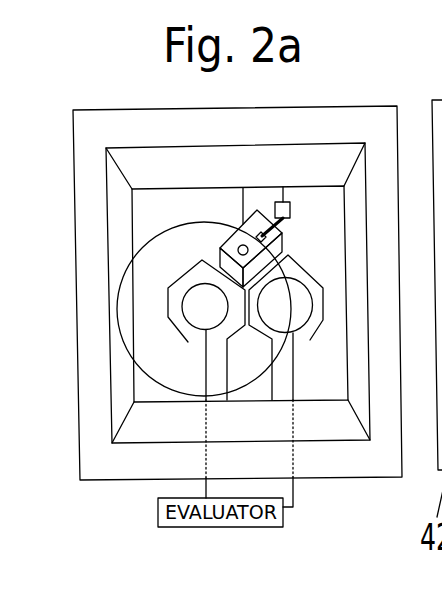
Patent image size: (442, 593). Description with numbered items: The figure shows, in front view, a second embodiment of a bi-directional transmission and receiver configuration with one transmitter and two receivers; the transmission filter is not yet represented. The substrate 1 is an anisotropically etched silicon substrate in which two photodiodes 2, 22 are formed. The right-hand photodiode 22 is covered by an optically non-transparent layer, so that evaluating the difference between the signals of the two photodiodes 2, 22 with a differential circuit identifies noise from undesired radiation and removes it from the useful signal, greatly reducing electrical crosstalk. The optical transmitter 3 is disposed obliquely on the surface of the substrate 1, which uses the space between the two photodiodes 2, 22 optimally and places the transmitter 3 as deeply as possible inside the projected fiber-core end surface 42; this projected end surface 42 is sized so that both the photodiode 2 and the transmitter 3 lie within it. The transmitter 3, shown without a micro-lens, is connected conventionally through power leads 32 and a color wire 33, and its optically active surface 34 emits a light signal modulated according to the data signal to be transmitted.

The substrate 1 is at (86, 139).
The photodiode 2 is at (197, 310).
The optical transmitter 3 is at (240, 237).
The photodiode 22 is at (298, 318).
The power leads 32 is at (288, 203).
The color wire 33 is at (348, 143).
The optically active surface 34 is at (220, 248).
The projected fiber-core end surface 42 is at (168, 382).